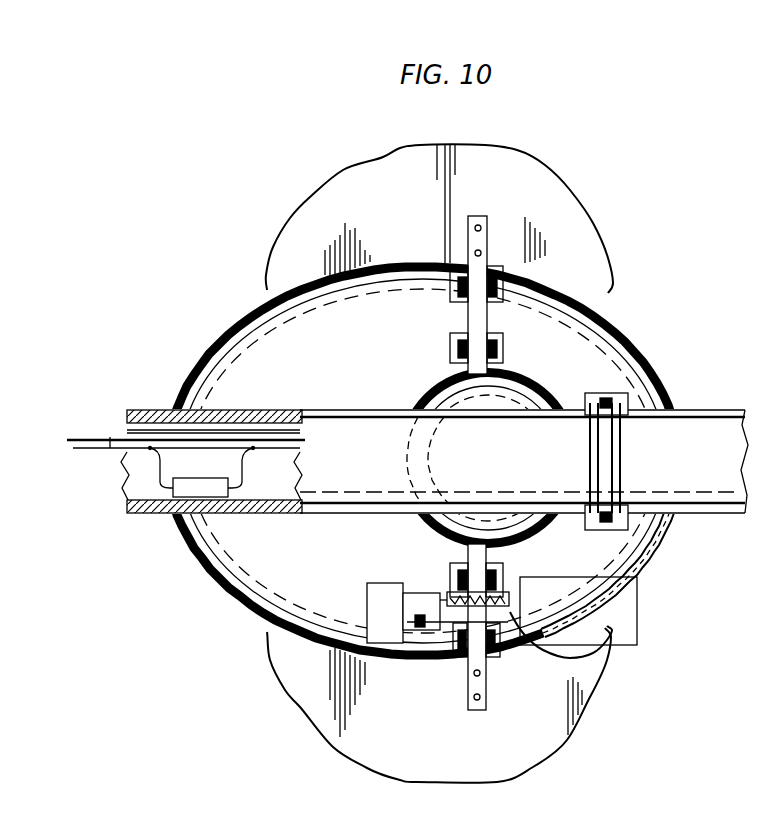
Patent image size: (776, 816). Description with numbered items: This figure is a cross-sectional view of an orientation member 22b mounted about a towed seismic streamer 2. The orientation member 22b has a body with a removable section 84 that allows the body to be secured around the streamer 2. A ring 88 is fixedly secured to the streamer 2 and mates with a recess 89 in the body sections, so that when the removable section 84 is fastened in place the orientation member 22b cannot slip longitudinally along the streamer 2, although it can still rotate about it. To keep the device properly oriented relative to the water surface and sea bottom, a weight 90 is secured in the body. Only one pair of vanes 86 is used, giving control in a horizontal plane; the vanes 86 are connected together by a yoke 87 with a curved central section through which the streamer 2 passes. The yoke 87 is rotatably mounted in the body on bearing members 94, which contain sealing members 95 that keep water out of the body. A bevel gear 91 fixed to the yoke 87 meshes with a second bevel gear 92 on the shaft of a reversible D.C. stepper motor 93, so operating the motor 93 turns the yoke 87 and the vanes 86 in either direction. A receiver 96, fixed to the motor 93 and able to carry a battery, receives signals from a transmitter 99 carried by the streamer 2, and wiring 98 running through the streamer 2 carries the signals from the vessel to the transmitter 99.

The streamer 2 is at (713, 413).
The orientation member 22b is at (226, 259).
The removable section 84 is at (350, 369).
The vanes 86 is at (411, 222).
The yoke 87 is at (472, 312).
The ring 88 is at (623, 440).
The recess 89 is at (630, 340).
The weight 90 is at (598, 662).
The bevel gear 91 is at (545, 660).
The second bevel gear 92 is at (462, 612).
The stepper motor 93 is at (423, 625).
The bearing members 94 is at (503, 345).
The sealing members 95 is at (503, 283).
The receiver 96 is at (367, 615).
The wiring 98 is at (97, 437).
The transmitter 99 is at (195, 490).